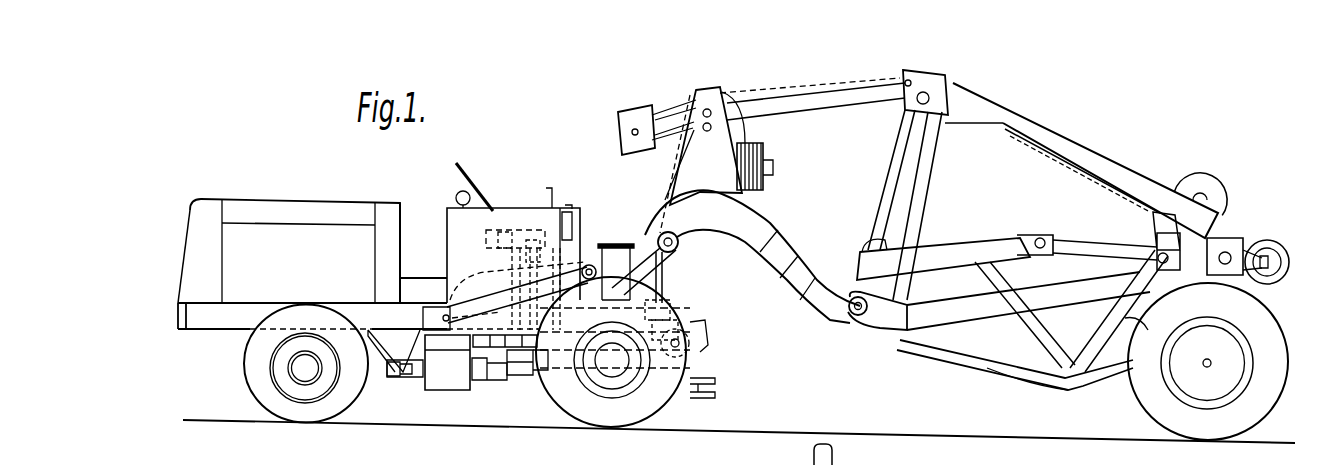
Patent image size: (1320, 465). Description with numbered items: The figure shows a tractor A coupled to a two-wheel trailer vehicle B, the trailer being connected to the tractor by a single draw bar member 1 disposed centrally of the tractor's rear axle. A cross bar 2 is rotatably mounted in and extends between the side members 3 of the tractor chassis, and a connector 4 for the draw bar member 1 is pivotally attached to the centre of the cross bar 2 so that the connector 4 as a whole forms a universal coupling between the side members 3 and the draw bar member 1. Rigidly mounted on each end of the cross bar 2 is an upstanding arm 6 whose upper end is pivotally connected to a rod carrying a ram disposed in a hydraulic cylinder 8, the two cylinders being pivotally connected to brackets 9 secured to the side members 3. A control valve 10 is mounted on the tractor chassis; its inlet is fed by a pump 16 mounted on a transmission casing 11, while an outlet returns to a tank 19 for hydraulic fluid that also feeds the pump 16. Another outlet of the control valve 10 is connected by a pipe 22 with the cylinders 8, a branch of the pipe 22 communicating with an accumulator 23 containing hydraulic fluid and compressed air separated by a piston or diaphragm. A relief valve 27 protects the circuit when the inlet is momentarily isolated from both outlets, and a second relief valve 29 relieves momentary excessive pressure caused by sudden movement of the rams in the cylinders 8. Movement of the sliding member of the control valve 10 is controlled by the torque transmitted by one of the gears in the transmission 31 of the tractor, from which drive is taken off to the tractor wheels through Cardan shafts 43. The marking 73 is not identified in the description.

The tractor A is at (301, 200).
The two-wheel trailer vehicle B is at (998, 97).
The draw bar member 1 is at (757, 242).
The cross bar 2 is at (650, 300).
The side members 3 is at (668, 318).
The connector 4 is at (645, 274).
The upstanding arm 6 is at (617, 255).
The hydraulic cylinder 8 is at (480, 210).
The brackets 9 is at (437, 322).
The control valve 10 is at (495, 357).
The transmission casing 11 is at (542, 372).
The pump 16 is at (592, 262).
The tank 19 is at (583, 208).
The pipe 22 is at (462, 272).
The accumulator 23 is at (565, 215).
The relief valve 27 is at (533, 238).
The second relief valve 29 is at (505, 230).
The transmission 31 is at (455, 380).
The Cardan shafts 43 is at (395, 374).
The pivot pin 73 is at (674, 343).